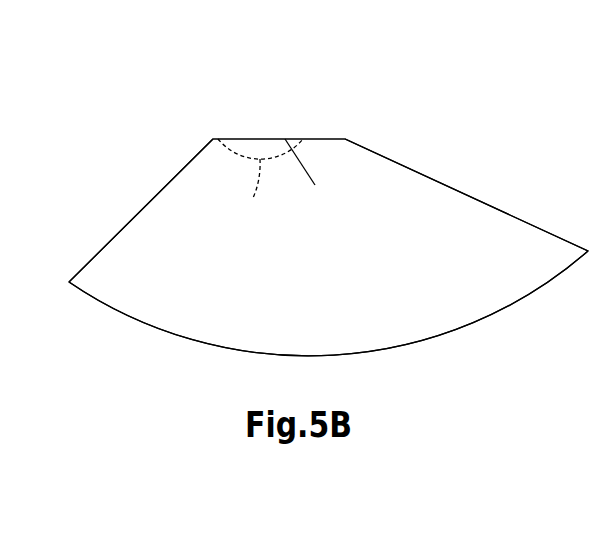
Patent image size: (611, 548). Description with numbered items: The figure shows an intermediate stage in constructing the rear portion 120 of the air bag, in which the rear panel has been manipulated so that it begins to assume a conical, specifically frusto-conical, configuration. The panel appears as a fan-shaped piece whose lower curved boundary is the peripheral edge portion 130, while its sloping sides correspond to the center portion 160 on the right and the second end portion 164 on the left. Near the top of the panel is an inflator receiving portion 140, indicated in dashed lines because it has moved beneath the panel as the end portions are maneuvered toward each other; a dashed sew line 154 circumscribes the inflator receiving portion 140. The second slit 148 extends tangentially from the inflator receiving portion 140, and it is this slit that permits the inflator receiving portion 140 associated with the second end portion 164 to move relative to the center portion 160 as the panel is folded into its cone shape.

The rear portion 120 is at (446, 124).
The peripheral edge portion 130 is at (390, 348).
The inflator receiving portion 140 is at (265, 148).
The second slit 148 is at (300, 173).
The sew line 154 is at (254, 190).
The center portion 160 is at (448, 212).
The second end portion 164 is at (137, 253).